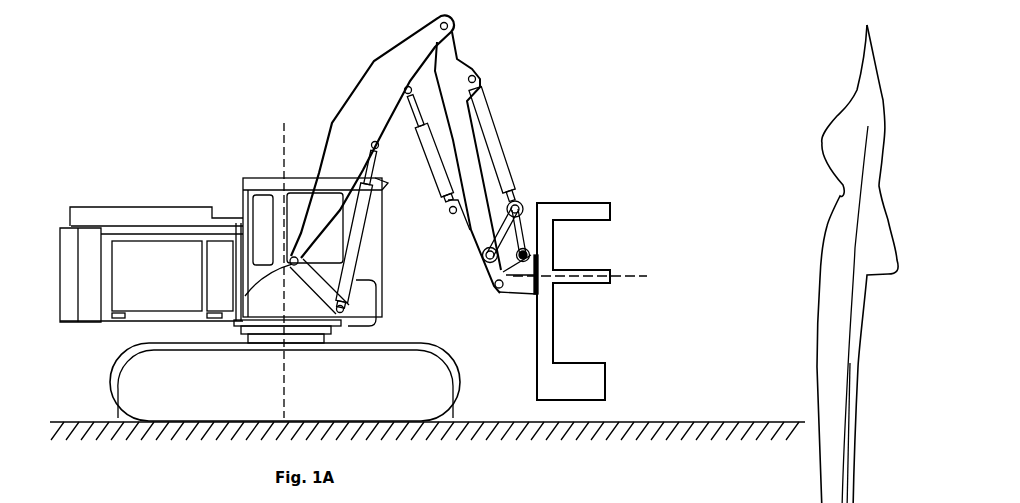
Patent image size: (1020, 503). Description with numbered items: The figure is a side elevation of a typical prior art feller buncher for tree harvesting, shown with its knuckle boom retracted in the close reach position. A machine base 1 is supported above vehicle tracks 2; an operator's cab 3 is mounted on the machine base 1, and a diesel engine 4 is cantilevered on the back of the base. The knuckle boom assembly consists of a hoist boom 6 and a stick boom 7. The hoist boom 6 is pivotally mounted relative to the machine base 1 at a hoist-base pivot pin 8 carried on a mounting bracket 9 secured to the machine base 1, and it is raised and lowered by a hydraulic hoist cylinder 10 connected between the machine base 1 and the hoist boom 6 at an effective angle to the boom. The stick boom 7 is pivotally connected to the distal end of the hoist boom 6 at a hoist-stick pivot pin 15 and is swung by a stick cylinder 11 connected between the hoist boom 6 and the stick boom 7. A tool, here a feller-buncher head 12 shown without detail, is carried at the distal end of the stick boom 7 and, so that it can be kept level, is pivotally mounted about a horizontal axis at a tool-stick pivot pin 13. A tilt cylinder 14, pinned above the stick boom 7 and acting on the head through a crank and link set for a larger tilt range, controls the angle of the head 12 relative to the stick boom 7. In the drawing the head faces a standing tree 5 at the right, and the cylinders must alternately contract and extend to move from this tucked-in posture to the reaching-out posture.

The machine base 1 is at (128, 314).
The vehicle tracks 2 is at (102, 389).
The operator's cab 3 is at (252, 184).
The diesel engine 4 is at (149, 199).
The tree 5 is at (814, 240).
The hoist boom 6 is at (345, 82).
The stick boom 7 is at (449, 113).
The hoist-base pivot pin 8 is at (280, 256).
The mounting bracket 9 is at (290, 283).
The hydraulic hoist cylinder 10 is at (353, 238).
The stick cylinder 11 is at (417, 146).
The feller-buncher head 12 is at (571, 354).
The tool-stick pivot pin 13 is at (485, 279).
The tilt cylinder 14 is at (482, 146).
The hoist-stick pivot pin 15 is at (442, 9).